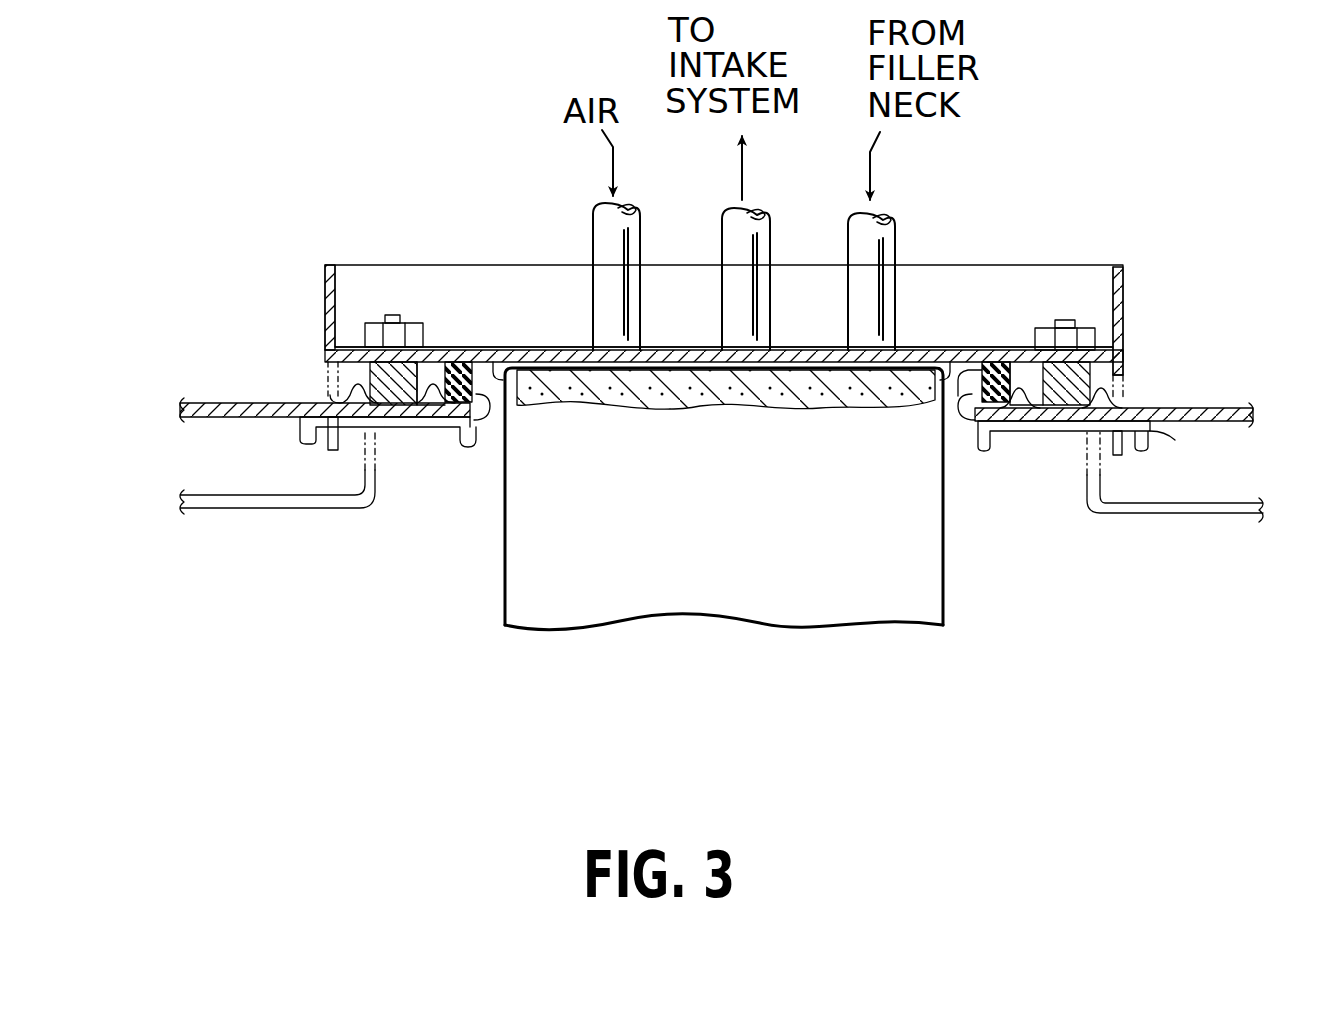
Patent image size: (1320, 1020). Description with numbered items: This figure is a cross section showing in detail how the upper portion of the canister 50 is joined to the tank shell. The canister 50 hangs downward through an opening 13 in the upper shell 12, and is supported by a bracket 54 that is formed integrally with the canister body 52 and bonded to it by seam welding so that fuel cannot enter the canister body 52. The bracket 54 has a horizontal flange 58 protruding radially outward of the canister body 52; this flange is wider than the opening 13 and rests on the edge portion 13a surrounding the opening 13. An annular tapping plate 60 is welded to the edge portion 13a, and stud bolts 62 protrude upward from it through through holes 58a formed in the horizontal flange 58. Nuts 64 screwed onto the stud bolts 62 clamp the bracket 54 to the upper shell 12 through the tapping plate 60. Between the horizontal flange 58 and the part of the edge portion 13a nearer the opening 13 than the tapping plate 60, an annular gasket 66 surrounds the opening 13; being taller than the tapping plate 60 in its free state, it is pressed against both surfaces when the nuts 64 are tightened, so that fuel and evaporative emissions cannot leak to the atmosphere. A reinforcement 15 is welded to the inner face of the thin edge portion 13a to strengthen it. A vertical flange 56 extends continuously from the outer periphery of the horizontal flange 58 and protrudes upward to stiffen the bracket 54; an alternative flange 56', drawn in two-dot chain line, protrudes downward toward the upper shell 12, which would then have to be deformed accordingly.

The upper shell 12 is at (1242, 405).
The opening 13 is at (497, 402).
The edge portion 13a is at (1030, 444).
The reinforcement 15 is at (1150, 432).
The canister 50 is at (988, 584).
The canister body 52 is at (806, 595).
The bracket 54 is at (926, 350).
The vertical flange 56 is at (779, 295).
The downward-protruding flange 56' is at (1187, 337).
The horizontal flange 58 is at (1025, 352).
The through holes 58a is at (360, 375).
The tapping plate 60 is at (432, 363).
The stud bolts 62 is at (390, 316).
The nuts 64 is at (417, 323).
The gasket 66 is at (960, 380).